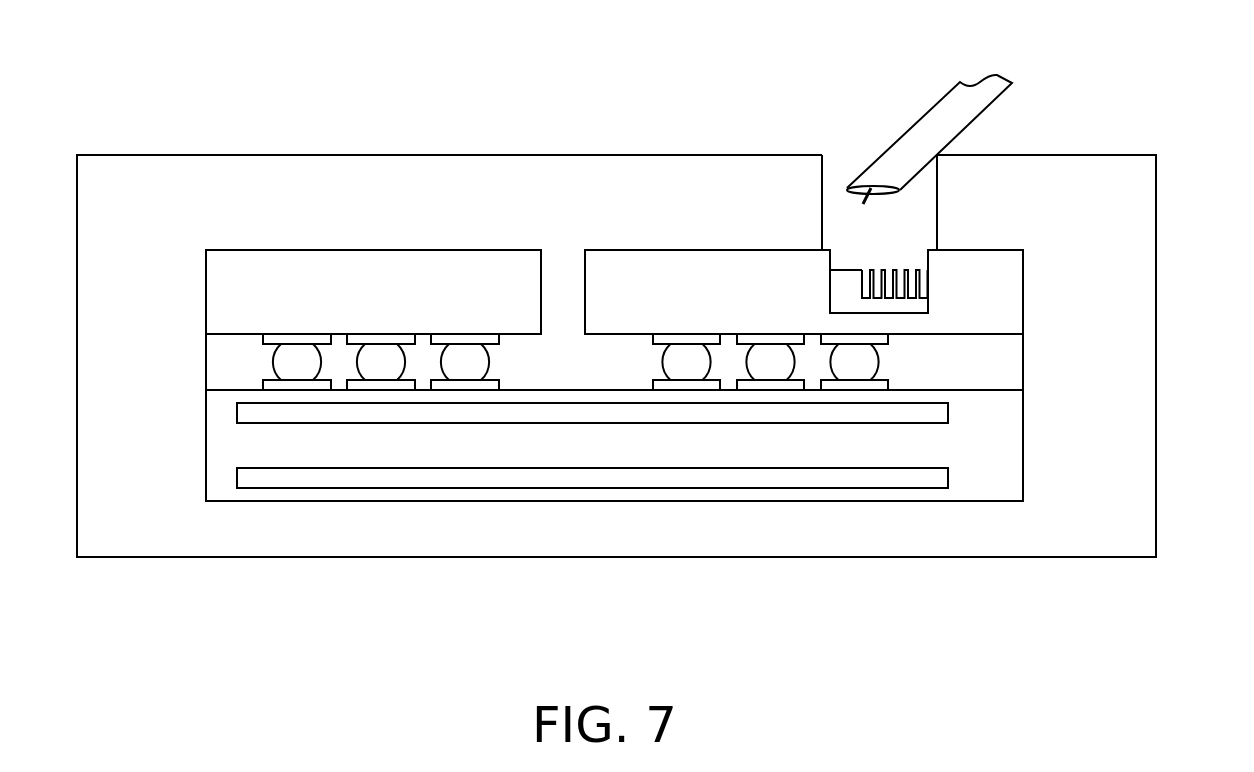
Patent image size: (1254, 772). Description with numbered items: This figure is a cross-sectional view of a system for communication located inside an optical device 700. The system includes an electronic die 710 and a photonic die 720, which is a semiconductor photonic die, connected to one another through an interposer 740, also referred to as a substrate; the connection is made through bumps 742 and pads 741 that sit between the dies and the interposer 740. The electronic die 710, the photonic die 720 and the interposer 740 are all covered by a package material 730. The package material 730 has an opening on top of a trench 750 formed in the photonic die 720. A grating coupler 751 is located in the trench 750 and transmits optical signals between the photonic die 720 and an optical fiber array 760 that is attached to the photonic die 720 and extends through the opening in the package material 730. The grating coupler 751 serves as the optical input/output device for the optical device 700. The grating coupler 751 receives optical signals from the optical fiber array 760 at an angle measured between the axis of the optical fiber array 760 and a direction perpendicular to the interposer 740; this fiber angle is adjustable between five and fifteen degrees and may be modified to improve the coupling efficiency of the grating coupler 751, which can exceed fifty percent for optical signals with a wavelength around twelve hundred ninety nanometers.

The optical device 700 is at (1253, 650).
The electronic die 710 is at (324, 277).
The photonic die 720 is at (648, 277).
The package material 730 is at (1112, 352).
The interposer 740 is at (559, 452).
The pads 741 is at (500, 342).
The bumps 742 is at (880, 362).
The trench 750 is at (868, 190).
The grating coupler 751 is at (876, 268).
The optical fiber array 760 is at (938, 95).